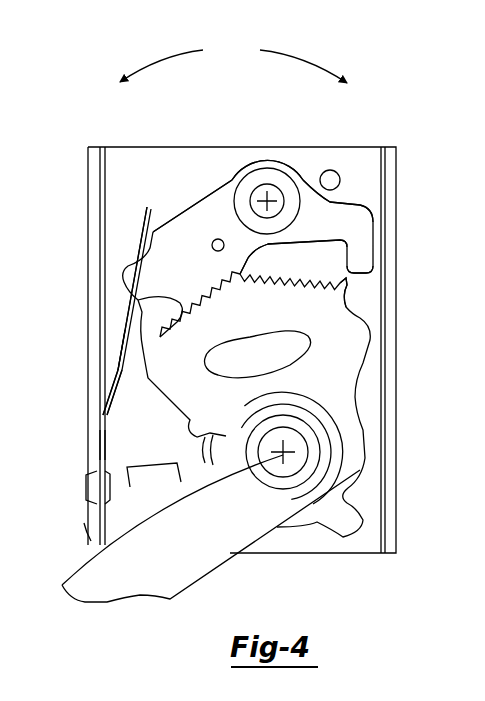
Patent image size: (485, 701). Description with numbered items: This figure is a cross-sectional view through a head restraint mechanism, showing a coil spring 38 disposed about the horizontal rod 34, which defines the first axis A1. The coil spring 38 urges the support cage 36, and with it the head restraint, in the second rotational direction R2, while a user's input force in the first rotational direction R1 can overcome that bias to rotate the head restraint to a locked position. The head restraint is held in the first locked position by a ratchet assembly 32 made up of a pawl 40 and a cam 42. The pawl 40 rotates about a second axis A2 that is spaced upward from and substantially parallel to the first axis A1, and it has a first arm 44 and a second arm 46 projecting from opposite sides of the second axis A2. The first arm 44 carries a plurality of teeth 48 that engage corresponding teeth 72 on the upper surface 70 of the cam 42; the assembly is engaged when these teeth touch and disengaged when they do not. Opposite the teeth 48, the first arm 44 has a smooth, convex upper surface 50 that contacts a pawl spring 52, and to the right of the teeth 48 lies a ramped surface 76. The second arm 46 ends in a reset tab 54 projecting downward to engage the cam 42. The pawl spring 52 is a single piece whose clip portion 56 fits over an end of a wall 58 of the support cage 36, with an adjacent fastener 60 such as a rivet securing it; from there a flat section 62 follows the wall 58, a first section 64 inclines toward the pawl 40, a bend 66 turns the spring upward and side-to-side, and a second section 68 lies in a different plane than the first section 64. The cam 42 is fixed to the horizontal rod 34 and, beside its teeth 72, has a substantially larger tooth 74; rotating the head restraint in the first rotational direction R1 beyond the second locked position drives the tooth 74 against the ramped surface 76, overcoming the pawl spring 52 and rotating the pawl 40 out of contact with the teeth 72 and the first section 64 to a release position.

The first rotational direction R1 is at (298, 55).
The second rotational direction R2 is at (165, 55).
The ratchet assembly 32 is at (321, 163).
The horizontal rod 34 is at (301, 408).
The support cage 36 is at (396, 163).
The coil spring 38 is at (322, 422).
The pawl 40 is at (229, 172).
The cam 42 is at (364, 312).
The first arm 44 is at (193, 228).
The second arm 46 is at (345, 218).
The teeth 48 is at (160, 297).
The upper surface 50 is at (148, 258).
The pawl spring 52 is at (120, 335).
The reset tab 54 is at (362, 260).
The clip portion 56 is at (74, 543).
The wall 58 is at (99, 452).
The fastener 60 is at (87, 490).
The flat section 62 is at (110, 442).
The first section 64 is at (117, 372).
The bend 66 is at (126, 293).
The second section 68 is at (137, 235).
The upper surface 70 is at (278, 272).
The teeth 72 is at (198, 327).
The tooth 74 is at (342, 283).
The ramped surface 76 is at (247, 282).
The first axis A1 is at (285, 455).
The second axis A2 is at (271, 195).